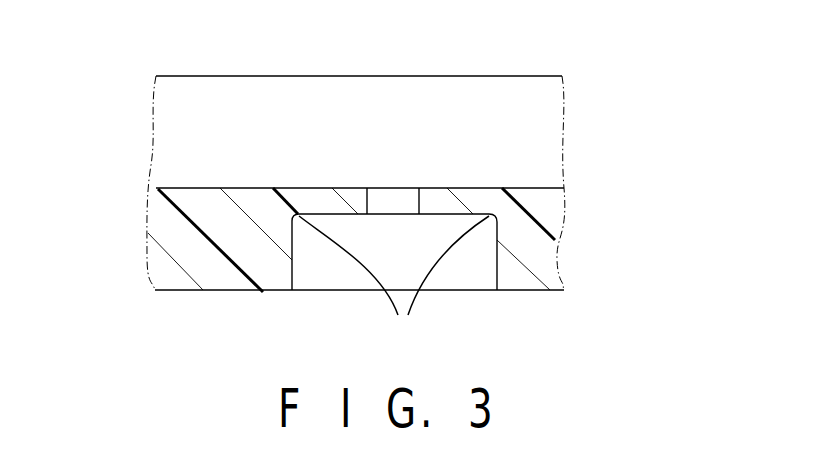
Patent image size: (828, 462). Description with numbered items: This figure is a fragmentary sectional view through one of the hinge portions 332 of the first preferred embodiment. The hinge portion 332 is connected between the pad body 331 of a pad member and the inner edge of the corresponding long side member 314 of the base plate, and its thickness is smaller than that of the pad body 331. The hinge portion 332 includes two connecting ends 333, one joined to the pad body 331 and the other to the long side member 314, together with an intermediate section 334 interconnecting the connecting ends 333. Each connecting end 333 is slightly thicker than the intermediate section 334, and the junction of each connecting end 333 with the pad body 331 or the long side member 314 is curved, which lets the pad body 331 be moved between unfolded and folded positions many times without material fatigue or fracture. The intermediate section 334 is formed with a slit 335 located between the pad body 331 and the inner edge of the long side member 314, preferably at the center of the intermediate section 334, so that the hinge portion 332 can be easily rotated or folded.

The long side member 314 is at (233, 235).
The pad body 331 is at (525, 240).
The hinge portion 332 is at (387, 172).
The connecting end 333 is at (394, 280).
The intermediate section 334 is at (472, 188).
The slit 335 is at (390, 202).